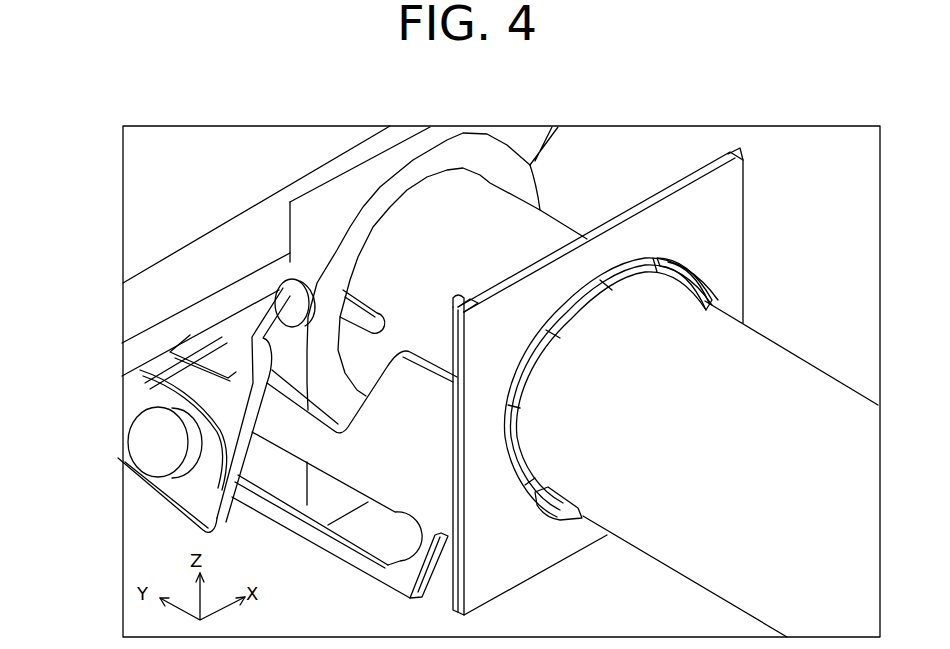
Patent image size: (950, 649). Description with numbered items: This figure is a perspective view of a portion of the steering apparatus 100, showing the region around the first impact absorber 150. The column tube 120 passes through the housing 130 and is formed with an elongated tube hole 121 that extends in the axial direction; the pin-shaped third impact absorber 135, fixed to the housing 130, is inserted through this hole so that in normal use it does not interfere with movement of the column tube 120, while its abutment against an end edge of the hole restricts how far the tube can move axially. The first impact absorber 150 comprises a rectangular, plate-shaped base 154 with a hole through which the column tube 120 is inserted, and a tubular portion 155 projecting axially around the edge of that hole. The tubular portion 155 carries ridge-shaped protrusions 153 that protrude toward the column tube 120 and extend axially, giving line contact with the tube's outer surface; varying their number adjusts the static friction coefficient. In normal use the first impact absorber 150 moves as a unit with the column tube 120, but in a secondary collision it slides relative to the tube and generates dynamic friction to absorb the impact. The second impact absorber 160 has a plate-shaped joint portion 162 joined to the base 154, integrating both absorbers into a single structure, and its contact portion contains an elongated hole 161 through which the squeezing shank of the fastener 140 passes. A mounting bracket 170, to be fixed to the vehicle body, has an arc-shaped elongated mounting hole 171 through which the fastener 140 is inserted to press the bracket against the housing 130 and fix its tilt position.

The steering apparatus 100 is at (704, 100).
The column tube 120 is at (812, 388).
The elongated tube hole 121 is at (357, 310).
The housing 130 is at (355, 186).
The third impact absorber 135 is at (298, 281).
The fastener 140 is at (138, 442).
The first impact absorber 150 is at (832, 263).
The protrusions 153 is at (607, 290).
The base 154 is at (540, 563).
The tubular portion 155 is at (683, 272).
The second impact absorber 160 is at (323, 540).
The elongated hole 161 is at (373, 538).
The joint portion 162 is at (458, 296).
The mounting bracket 170 is at (203, 372).
The elongated mounting hole 171 is at (155, 440).